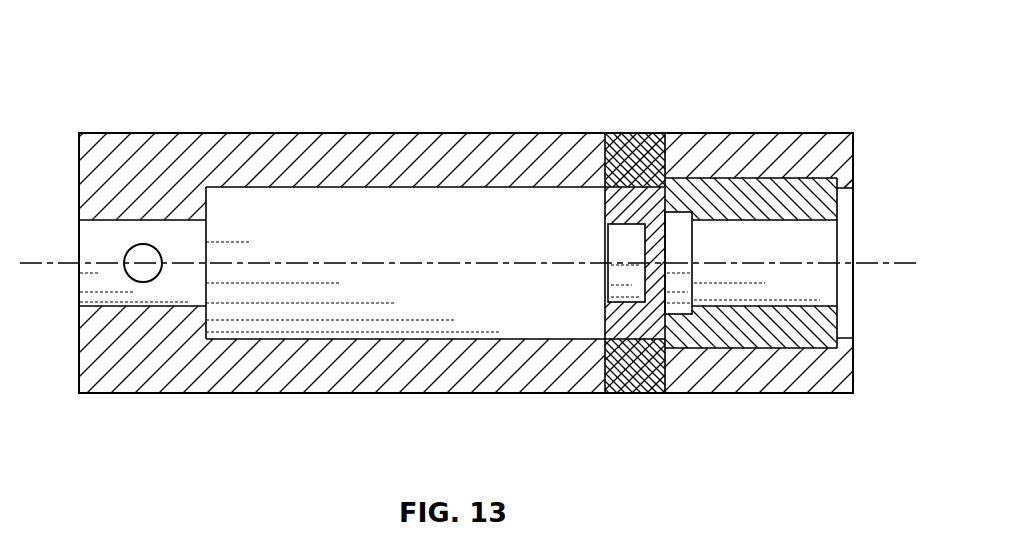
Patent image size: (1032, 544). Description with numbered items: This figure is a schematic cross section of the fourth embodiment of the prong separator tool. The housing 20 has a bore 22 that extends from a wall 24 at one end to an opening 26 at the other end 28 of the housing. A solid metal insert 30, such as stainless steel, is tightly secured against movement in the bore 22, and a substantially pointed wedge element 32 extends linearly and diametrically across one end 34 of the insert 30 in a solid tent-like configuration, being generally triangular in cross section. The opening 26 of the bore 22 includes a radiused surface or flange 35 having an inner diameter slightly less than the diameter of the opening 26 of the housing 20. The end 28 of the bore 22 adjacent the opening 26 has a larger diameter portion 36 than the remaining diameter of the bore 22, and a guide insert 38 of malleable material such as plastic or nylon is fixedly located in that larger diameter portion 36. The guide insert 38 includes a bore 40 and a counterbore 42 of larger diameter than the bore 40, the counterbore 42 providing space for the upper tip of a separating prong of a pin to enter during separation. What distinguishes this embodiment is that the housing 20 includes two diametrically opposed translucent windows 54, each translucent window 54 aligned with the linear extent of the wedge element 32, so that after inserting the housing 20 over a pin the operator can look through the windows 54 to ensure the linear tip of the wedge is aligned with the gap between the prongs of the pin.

The housing 20 is at (477, 248).
The bore 22 is at (506, 212).
The wall 24 is at (207, 318).
The opening 26 is at (868, 212).
The end 28 is at (853, 160).
The solid metal insert 30 is at (352, 207).
The wedge element 32 is at (626, 255).
The end of insert 34 is at (599, 263).
The radiused surface or flange 35 is at (846, 190).
The larger diameter portion 36 is at (774, 254).
The guide insert 38 is at (827, 337).
The bore of guide insert 40 is at (718, 222).
The counterbore 42 is at (690, 314).
The translucent window 54 is at (625, 143).